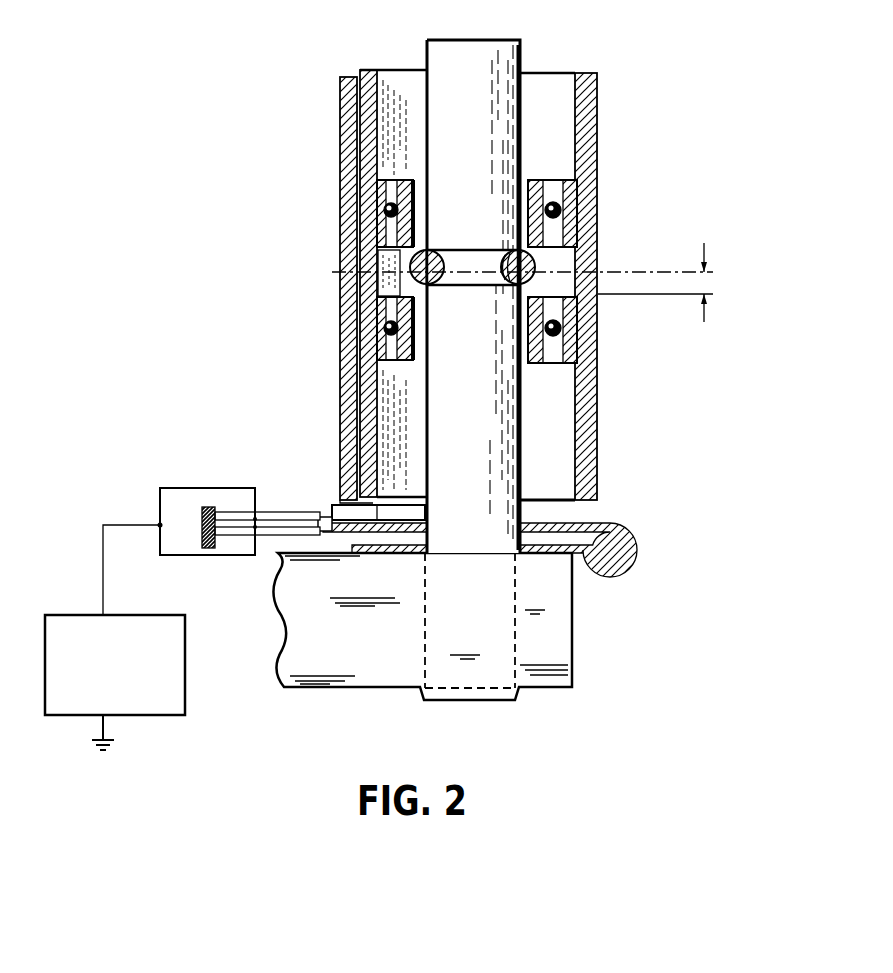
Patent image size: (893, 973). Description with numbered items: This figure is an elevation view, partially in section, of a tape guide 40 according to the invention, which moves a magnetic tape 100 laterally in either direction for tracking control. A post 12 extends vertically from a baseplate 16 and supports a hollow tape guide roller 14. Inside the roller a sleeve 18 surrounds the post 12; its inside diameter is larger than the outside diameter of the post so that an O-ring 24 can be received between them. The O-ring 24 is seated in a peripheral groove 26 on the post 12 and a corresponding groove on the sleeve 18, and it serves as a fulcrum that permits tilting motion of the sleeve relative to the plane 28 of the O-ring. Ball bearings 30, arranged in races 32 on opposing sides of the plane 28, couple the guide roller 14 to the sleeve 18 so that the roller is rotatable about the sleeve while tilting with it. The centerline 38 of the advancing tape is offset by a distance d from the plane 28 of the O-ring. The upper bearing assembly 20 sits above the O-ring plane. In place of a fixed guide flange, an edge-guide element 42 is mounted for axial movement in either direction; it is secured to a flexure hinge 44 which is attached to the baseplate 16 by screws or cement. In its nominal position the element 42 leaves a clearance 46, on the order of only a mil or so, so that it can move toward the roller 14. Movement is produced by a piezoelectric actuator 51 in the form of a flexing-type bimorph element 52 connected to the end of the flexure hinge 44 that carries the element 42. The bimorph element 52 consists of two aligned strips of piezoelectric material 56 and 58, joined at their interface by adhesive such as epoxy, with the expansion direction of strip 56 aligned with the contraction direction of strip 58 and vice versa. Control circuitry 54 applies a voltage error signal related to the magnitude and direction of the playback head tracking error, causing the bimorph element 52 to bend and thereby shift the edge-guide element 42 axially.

The post 12 is at (524, 92).
The tape guide roller 14 is at (597, 430).
The baseplate 16 is at (333, 643).
The sleeve 18 is at (357, 268).
The upper bearing 20 is at (522, 180).
The O-ring 24 is at (408, 252).
The peripheral groove 26 is at (480, 290).
The plane of the O-ring 28 is at (643, 268).
The ball bearings 30 is at (595, 205).
The races 32 is at (595, 237).
The centerline of the advancing tape 38 is at (640, 295).
The tape guide 40 is at (647, 84).
The edge-guide element 42 is at (335, 506).
The flexure hinge 44 is at (630, 534).
The clearance 46 is at (338, 498).
The piezoelectric actuator 51 is at (193, 480).
The bimorph element 52 is at (240, 535).
The control circuitry 54 is at (187, 645).
The strip of piezoelectric material 56 is at (270, 536).
The strip of piezoelectric material 58 is at (283, 514).
The magnetic tape 100 is at (340, 413).